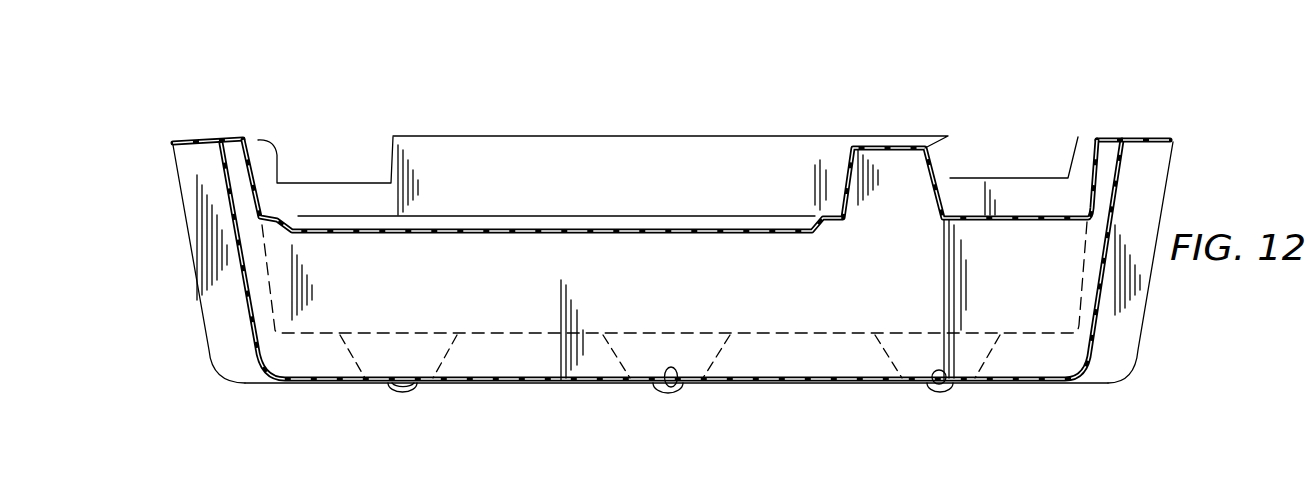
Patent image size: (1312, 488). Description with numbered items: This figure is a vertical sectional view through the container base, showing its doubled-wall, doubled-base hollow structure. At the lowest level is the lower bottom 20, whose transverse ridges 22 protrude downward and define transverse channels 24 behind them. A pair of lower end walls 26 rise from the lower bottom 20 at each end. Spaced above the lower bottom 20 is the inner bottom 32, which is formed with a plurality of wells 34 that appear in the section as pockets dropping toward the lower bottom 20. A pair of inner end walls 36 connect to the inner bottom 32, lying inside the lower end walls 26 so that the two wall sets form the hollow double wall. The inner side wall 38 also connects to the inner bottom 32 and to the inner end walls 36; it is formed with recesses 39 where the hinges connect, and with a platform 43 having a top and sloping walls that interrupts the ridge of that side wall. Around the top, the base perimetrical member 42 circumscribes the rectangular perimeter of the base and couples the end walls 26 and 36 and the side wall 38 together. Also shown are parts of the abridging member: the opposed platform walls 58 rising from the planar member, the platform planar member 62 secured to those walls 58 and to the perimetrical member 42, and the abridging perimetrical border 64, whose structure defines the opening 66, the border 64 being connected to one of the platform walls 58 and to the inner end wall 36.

The lower bottom 20 is at (816, 385).
The transverse ridges 22 is at (683, 390).
The transverse channels 24 is at (667, 378).
The lower end walls 26 is at (232, 308).
The inner bottom 32 is at (793, 333).
The wells 34 is at (379, 365).
The inner end walls 36 is at (328, 163).
The inner side wall 38 is at (298, 217).
The recesses 39 is at (258, 182).
The base perimetrical member 42 is at (243, 139).
The platform 43 is at (1247, 487).
The platform walls 58 is at (850, 198).
The platform planar member 62 is at (948, 137).
The abridging perimetrical border 64 is at (452, 186).
The opening 66 is at (642, 228).